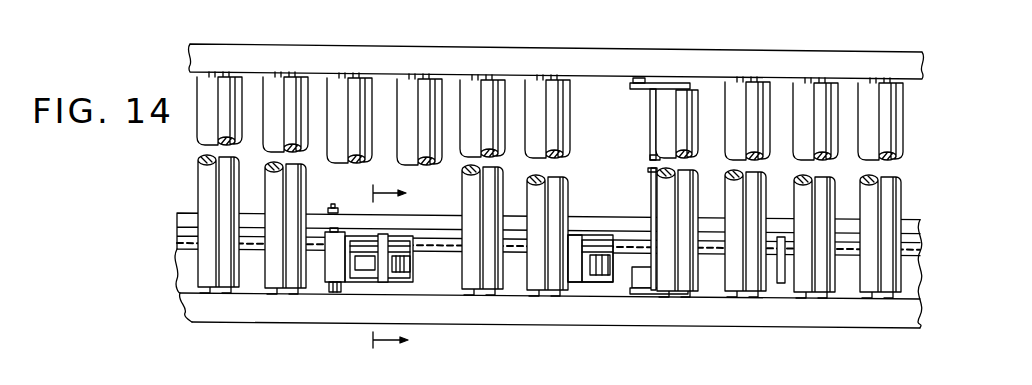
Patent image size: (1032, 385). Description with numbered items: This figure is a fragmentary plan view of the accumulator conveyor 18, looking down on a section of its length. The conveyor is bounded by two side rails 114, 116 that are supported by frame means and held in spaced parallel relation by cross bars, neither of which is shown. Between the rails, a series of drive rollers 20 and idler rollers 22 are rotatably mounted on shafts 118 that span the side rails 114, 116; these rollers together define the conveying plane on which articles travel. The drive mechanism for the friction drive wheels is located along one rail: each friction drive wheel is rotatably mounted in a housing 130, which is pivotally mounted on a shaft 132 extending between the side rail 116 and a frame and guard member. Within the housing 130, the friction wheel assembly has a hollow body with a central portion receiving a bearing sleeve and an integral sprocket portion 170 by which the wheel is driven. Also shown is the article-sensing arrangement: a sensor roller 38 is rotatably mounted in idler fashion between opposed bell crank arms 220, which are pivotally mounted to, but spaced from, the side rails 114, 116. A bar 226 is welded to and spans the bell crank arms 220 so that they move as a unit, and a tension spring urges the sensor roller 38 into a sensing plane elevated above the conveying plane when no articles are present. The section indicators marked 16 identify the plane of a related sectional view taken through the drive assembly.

The section line 16 is at (376, 269).
The accumulator conveyor 18 is at (180, 183).
The drive rollers 20 is at (405, 85).
The idler rollers 22 is at (477, 287).
The sensor roller 38 is at (698, 107).
The side rail 114 is at (862, 62).
The side rail 116 is at (866, 320).
The shafts 118 is at (286, 75).
The housing 130 is at (395, 245).
The shaft 132 is at (334, 207).
The sprocket portion 170 is at (396, 243).
The bell crank arms 220 is at (653, 83).
The bar 226 is at (650, 172).